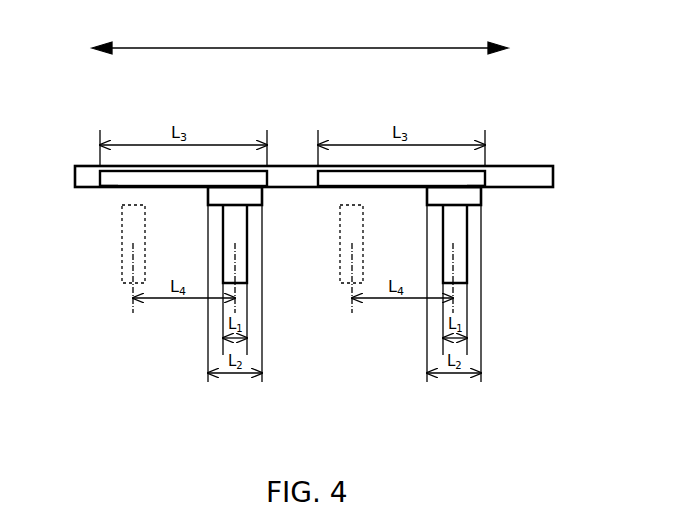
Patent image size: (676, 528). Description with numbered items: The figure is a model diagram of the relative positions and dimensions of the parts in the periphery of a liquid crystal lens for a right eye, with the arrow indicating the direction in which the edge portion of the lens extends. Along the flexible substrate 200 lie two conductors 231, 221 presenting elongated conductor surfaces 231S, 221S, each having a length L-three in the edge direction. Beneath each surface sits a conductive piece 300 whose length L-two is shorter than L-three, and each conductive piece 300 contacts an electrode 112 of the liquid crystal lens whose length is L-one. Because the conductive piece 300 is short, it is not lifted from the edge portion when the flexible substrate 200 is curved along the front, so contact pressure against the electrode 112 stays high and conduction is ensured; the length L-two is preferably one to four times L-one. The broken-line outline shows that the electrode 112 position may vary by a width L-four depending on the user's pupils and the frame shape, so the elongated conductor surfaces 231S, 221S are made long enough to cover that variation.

The flexible substrate 200 is at (536, 166).
The conductor 231 is at (148, 177).
The conductor 221 is at (368, 179).
The elongated conductor surface 231S is at (118, 190).
The elongated conductor surface 221S is at (483, 190).
The conductive piece 300 is at (262, 205).
The electrode 112 is at (247, 265).